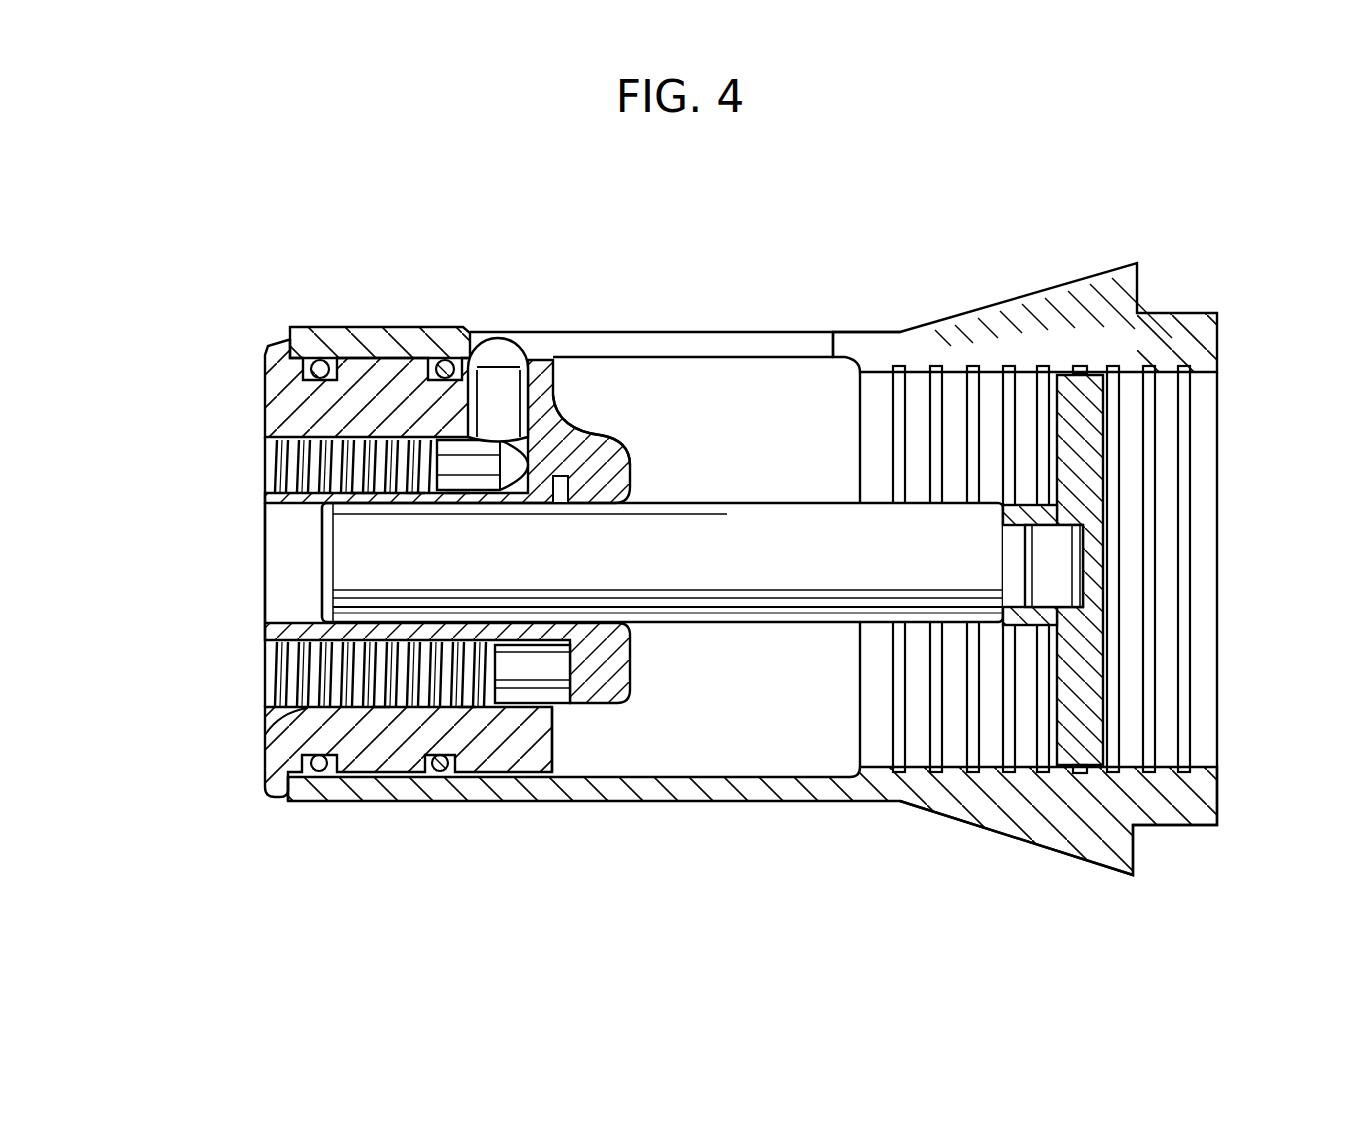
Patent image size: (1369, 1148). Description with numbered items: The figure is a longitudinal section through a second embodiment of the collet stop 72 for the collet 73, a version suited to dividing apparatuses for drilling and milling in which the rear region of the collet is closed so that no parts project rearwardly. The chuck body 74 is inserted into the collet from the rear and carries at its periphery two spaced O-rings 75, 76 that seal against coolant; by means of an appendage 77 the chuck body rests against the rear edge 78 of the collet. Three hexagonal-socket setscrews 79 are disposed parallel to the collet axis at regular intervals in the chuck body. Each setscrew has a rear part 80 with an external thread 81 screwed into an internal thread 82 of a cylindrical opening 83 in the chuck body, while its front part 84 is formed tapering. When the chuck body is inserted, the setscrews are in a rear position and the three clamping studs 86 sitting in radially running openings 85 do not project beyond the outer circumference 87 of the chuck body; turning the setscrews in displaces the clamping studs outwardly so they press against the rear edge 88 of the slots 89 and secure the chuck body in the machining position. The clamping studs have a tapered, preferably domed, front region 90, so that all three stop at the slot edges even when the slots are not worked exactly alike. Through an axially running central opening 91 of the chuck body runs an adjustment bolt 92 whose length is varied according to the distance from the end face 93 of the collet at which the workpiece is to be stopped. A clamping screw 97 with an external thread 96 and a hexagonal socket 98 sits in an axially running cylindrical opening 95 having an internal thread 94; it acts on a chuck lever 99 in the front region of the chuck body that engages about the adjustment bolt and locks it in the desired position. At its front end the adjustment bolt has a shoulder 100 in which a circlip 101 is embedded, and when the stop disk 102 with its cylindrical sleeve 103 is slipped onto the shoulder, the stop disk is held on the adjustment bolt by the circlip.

The collet stop 72 is at (736, 626).
The collet 73 is at (613, 805).
The chuck body 74 is at (355, 385).
The O-ring 75 is at (437, 807).
The O-ring 76 is at (318, 807).
The appendage 77 is at (263, 793).
The rear edge 78 is at (287, 807).
The hexagonal-socket setscrew 79 is at (400, 432).
The rear part 80 is at (413, 507).
The external thread 81 is at (457, 507).
The internal thread 82 is at (360, 507).
The cylindrical opening 83 is at (265, 463).
The front part 84 is at (603, 456).
The radially running opening 85 is at (557, 403).
The clamping stud 86 is at (533, 507).
The outer circumference 87 is at (565, 332).
The rear edge 88 is at (478, 345).
The slot 89 is at (825, 332).
The front region 90 is at (508, 340).
The central opening 91 is at (292, 624).
The adjustment bolt 92 is at (778, 530).
The end face 93 is at (1220, 348).
The internal thread 94 is at (262, 747).
The cylindrical opening 95 is at (553, 717).
The external thread 96 is at (465, 707).
The clamping screw 97 is at (381, 707).
The hexagonal socket 98 is at (262, 685).
The chuck lever 99 is at (610, 657).
The shoulder 100 is at (1120, 566).
The circlip 101 is at (1020, 580).
The stop disk 102 is at (1062, 385).
The cylindrical sleeve 103 is at (1000, 518).